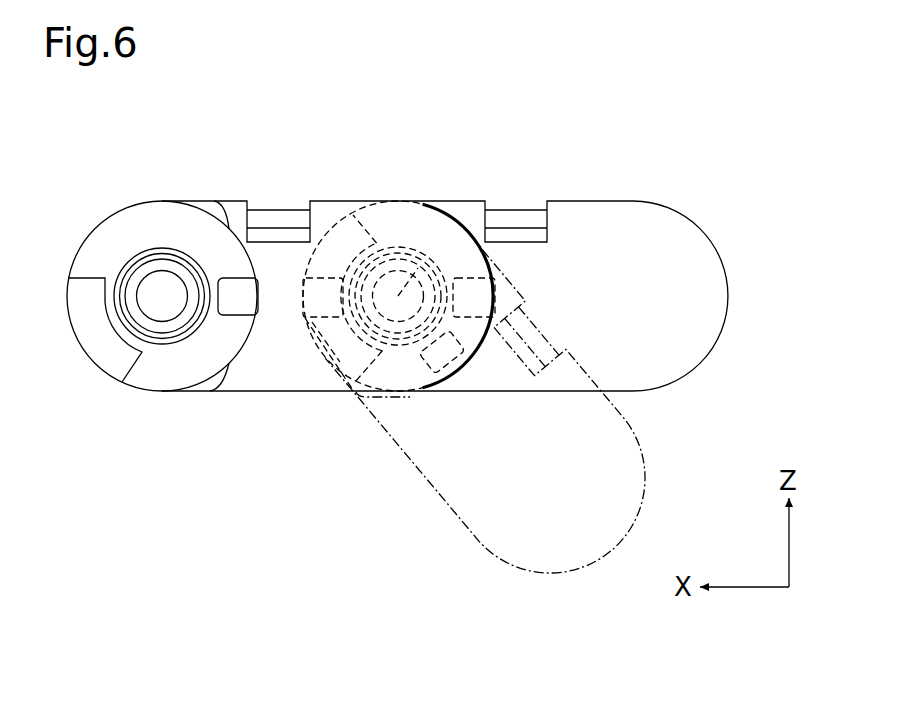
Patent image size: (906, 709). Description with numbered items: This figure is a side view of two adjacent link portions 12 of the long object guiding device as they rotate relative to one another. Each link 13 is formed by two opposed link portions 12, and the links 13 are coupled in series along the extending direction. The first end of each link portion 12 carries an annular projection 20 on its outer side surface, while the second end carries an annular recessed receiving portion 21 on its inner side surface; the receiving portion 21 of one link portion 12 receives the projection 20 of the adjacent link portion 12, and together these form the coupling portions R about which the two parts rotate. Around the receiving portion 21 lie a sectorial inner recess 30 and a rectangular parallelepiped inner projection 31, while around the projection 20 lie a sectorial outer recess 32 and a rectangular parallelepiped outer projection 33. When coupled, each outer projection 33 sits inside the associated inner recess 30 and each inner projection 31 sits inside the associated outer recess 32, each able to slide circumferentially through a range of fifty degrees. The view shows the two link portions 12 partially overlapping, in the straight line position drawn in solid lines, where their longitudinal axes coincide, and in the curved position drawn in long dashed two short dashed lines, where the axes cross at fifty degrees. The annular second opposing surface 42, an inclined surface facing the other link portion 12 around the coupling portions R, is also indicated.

The link portion 12 is at (229, 200).
The link 13 is at (186, 199).
The projection 20 is at (157, 333).
The receiving portion 21 is at (430, 203).
The inner recess 30 is at (494, 345).
The inner projection 31 is at (318, 297).
The outer recess 32 is at (103, 355).
The outer projection 33 is at (237, 306).
The second opposing surface 42 is at (203, 373).
The coupling portions R is at (393, 250).